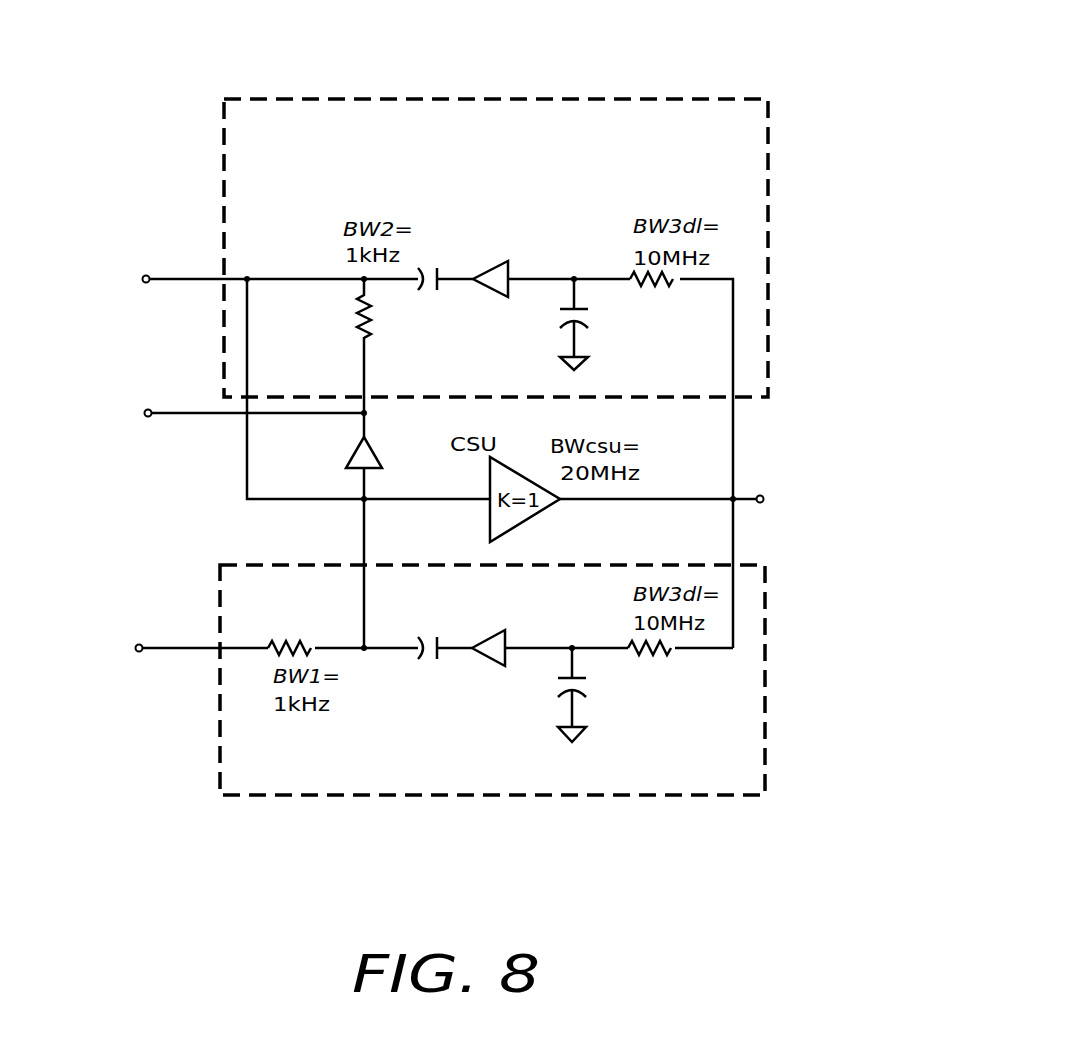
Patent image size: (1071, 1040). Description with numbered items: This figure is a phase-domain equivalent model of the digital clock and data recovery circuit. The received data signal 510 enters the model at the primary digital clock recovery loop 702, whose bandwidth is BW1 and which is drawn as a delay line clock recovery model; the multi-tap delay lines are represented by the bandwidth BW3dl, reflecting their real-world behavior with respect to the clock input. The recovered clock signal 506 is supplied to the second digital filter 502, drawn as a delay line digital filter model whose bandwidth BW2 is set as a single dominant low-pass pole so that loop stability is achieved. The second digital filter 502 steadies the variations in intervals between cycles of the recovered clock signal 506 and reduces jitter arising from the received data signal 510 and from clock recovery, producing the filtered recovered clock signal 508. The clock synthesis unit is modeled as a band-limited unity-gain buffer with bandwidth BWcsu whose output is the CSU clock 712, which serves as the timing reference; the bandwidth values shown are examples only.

The second digital filter 502 is at (645, 98).
The recovered clock signal 506 is at (112, 350).
The filtered recovered clock signal 508 is at (143, 183).
The received data signal 510 is at (123, 600).
The primary digital clock recovery loop 702 is at (765, 638).
The CSU clock output 712 is at (778, 437).